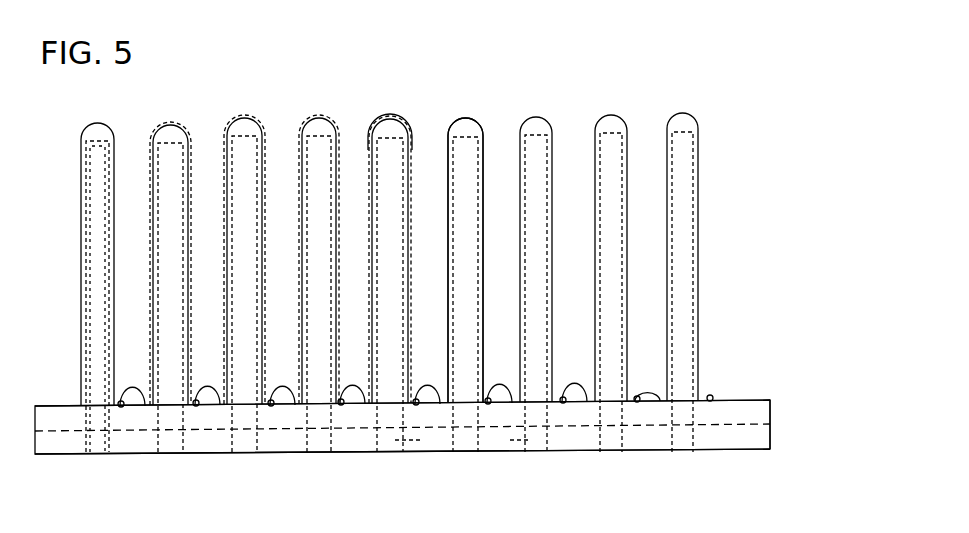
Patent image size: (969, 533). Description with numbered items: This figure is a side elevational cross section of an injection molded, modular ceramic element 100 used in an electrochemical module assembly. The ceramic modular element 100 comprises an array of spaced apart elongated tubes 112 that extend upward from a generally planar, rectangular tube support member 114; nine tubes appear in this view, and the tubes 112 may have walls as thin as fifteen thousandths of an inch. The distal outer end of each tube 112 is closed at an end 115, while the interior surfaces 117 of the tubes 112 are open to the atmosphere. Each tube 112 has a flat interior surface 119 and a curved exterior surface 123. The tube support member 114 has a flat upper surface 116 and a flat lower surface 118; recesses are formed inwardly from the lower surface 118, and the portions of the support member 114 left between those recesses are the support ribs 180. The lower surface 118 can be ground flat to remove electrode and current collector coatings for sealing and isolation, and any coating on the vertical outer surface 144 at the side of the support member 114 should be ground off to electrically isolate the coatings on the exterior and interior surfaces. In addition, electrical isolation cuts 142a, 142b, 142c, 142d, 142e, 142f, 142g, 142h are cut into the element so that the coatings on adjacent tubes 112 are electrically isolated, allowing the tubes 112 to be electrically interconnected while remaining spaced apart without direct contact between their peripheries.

The ceramic modular element 100 is at (758, 282).
The elongated tubes 112 is at (244, 130).
The tube support member 114 is at (42, 418).
The closed end 115 is at (457, 125).
The upper surface 116 is at (62, 404).
The interior surfaces 117 is at (620, 170).
The lower surface 118 is at (738, 450).
The flat interior surface 119 is at (312, 125).
The curved exterior surface 123 is at (390, 143).
The electrical isolation cut 142a is at (144, 400).
The electrical isolation cut 142b is at (218, 400).
The electrical isolation cut 142c is at (292, 400).
The electrical isolation cut 142d is at (438, 400).
The electrical isolation cut 142e is at (508, 400).
The electrical isolation cut 142f is at (587, 400).
The electrical isolation cut 142g is at (662, 402).
The electrical isolation cut 142h is at (711, 395).
The vertical outer surface 144 is at (770, 412).
The support ribs 180 is at (418, 445).